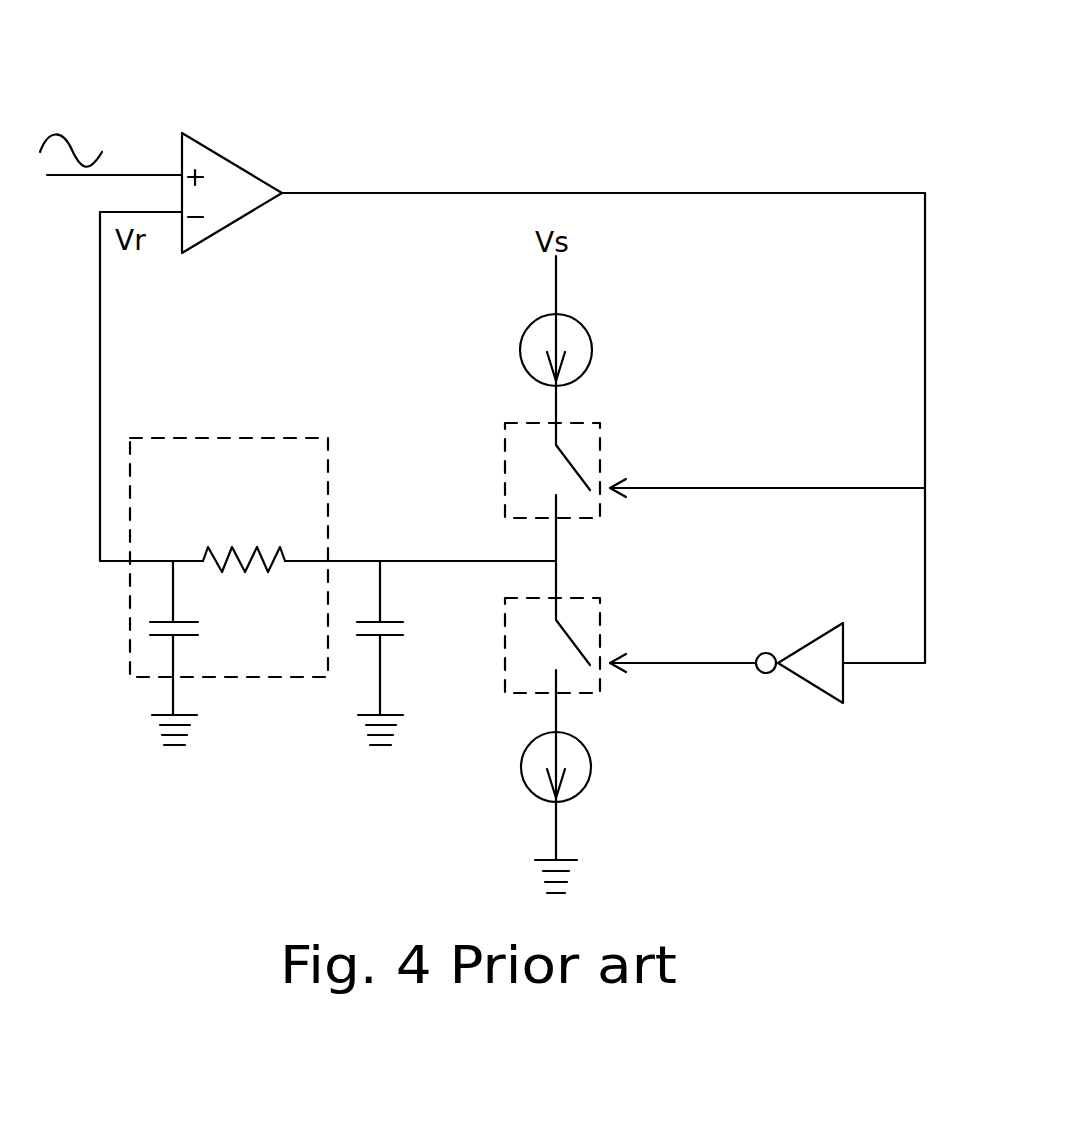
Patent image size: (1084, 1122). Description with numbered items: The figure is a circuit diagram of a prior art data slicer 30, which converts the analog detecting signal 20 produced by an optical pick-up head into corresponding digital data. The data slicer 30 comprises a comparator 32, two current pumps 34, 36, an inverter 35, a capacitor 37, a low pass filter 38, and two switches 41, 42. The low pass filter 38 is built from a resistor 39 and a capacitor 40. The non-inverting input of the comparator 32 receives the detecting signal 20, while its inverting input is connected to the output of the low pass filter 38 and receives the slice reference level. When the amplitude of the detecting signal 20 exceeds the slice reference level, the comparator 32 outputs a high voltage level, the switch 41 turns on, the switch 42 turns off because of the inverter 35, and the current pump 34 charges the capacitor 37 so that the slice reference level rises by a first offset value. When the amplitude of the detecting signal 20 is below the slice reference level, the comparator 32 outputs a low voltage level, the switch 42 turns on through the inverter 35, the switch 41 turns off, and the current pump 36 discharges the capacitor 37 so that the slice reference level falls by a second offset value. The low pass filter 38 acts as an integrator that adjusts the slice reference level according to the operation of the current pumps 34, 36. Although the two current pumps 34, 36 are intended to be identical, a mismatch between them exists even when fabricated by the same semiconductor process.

The analog detecting signal 20 is at (84, 108).
The data slicer 30 is at (842, 92).
The comparator 32 is at (237, 147).
The current pump 34 is at (587, 320).
The inverter 35 is at (815, 637).
The current pump 36 is at (592, 776).
The capacitor 37 is at (434, 646).
The low pass filter 38 is at (229, 541).
The resistor 39 is at (236, 514).
The capacitor 40 is at (224, 655).
The switch 41 is at (503, 428).
The switch 42 is at (503, 606).